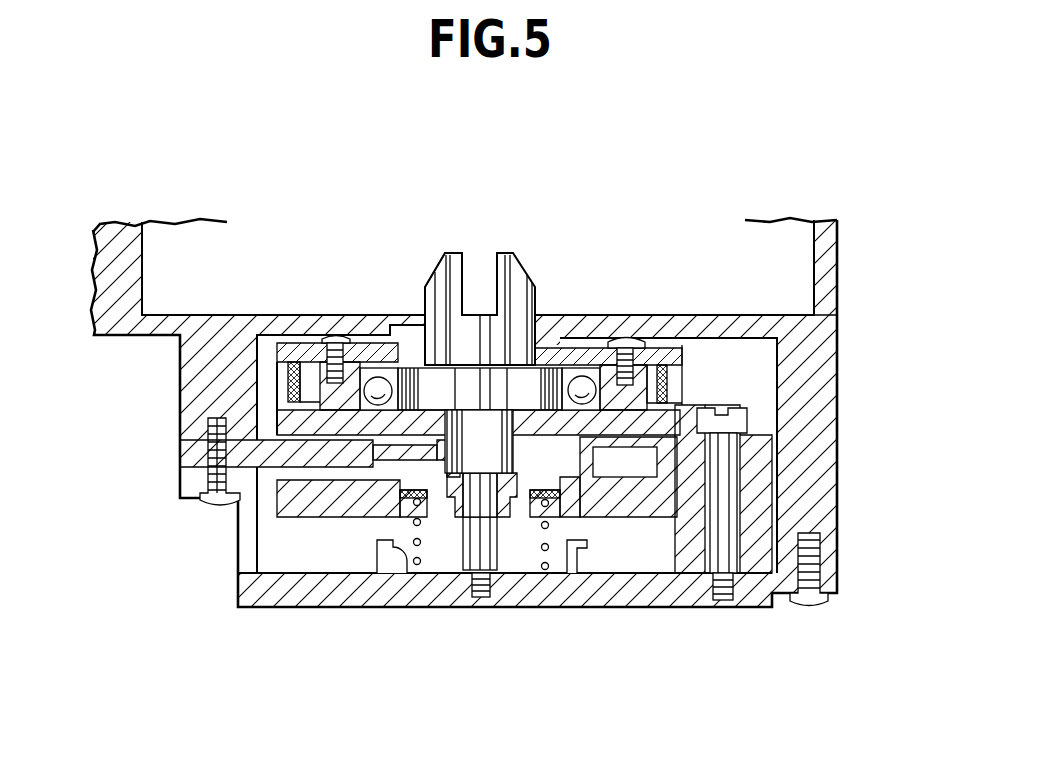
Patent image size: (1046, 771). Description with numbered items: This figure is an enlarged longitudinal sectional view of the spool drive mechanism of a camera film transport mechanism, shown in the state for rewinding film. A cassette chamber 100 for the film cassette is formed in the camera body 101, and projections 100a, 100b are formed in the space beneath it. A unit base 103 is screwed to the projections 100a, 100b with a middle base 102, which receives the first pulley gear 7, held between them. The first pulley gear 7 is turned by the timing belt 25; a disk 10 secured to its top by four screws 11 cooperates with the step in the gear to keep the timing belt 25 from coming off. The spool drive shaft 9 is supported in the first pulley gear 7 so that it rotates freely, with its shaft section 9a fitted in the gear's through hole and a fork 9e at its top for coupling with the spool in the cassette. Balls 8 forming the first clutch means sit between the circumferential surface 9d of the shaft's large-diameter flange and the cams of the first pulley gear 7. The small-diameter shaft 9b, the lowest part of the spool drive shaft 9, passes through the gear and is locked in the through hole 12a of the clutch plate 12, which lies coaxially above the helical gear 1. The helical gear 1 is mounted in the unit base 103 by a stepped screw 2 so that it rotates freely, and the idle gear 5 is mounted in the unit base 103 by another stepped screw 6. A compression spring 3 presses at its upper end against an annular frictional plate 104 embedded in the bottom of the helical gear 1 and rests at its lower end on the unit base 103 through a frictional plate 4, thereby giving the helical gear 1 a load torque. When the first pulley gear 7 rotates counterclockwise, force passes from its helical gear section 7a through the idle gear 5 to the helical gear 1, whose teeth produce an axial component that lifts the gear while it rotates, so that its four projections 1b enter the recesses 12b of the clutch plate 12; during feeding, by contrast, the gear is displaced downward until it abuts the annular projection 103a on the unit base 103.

The helical gear 1 is at (700, 585).
The projections 1b is at (388, 472).
The stepped screw 2 is at (492, 545).
The compression spring 3 is at (572, 520).
The frictional plate 4 is at (425, 522).
The idle gear 5 is at (750, 468).
The stepped screw 6 is at (722, 558).
The first pulley gear 7 is at (680, 402).
The helical gear section 7a is at (278, 412).
The balls 8 is at (377, 377).
The spool drive shaft 9 is at (510, 285).
The shaft section 9a is at (470, 425).
The small-diameter shaft 9b is at (480, 455).
The circumferential surface 9d is at (452, 387).
The fork 9e is at (488, 283).
The disk 10 is at (673, 365).
The screws 11 is at (330, 337).
The clutch plate 12 is at (447, 540).
The through hole 12a is at (548, 540).
The recesses 12b is at (405, 472).
The timing belt 25 is at (290, 343).
The cassette chamber 100 is at (668, 278).
The projection 100a is at (203, 377).
The projection 100b is at (803, 489).
The camera body 101 is at (826, 250).
The middle base 102 is at (190, 458).
The unit base 103 is at (273, 592).
The annular projection 103a is at (398, 583).
The frictional plate 104 is at (668, 505).